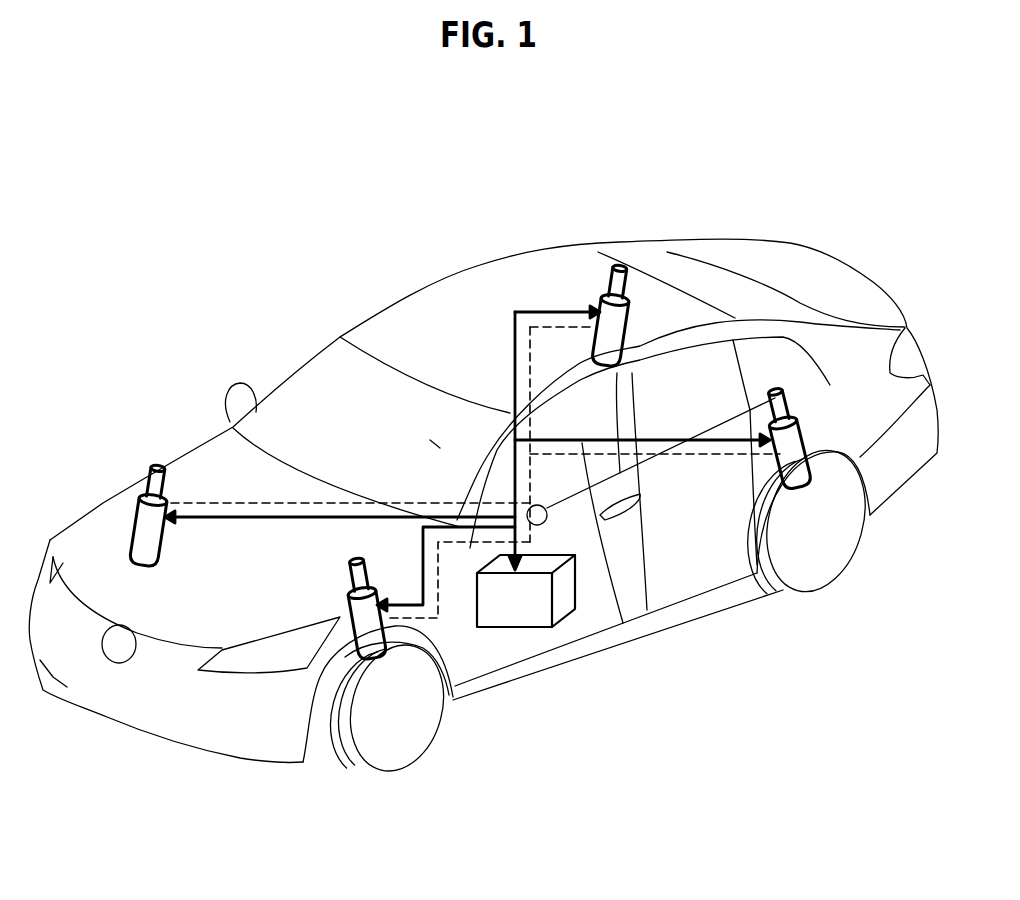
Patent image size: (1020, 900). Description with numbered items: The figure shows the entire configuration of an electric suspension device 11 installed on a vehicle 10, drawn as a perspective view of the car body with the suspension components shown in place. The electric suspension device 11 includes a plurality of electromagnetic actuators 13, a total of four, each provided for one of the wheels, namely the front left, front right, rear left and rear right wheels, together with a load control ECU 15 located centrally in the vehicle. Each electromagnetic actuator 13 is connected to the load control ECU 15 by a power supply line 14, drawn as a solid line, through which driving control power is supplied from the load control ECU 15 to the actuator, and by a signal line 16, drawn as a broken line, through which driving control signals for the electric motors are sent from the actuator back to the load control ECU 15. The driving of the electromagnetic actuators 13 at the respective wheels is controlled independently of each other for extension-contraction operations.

The vehicle 10 is at (452, 280).
The electric suspension device 11 is at (443, 465).
The electromagnetic actuator 13 is at (130, 537).
The power supply line 14 is at (603, 560).
The load control ECU 15 is at (513, 627).
The signal line 16 is at (693, 457).